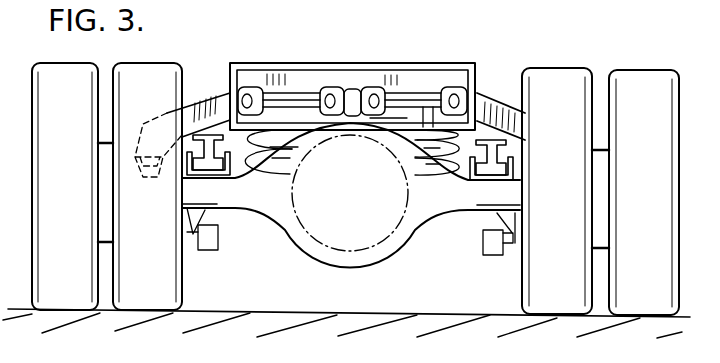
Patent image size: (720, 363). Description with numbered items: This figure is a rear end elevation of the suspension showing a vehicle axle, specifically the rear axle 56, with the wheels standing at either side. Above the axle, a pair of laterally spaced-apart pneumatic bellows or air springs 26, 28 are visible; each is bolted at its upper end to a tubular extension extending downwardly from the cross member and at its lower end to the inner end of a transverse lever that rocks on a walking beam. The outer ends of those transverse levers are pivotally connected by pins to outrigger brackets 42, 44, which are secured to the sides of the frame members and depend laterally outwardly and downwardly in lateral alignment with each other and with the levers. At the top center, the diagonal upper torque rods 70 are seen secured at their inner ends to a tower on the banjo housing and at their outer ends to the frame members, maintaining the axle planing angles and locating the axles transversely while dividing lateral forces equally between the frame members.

The air spring 26 is at (273, 153).
The air spring 28 is at (430, 138).
The outrigger bracket 42 is at (203, 98).
The outrigger bracket 44 is at (492, 103).
The rear axle 56 is at (440, 203).
The upper torque rod 70 is at (293, 97).